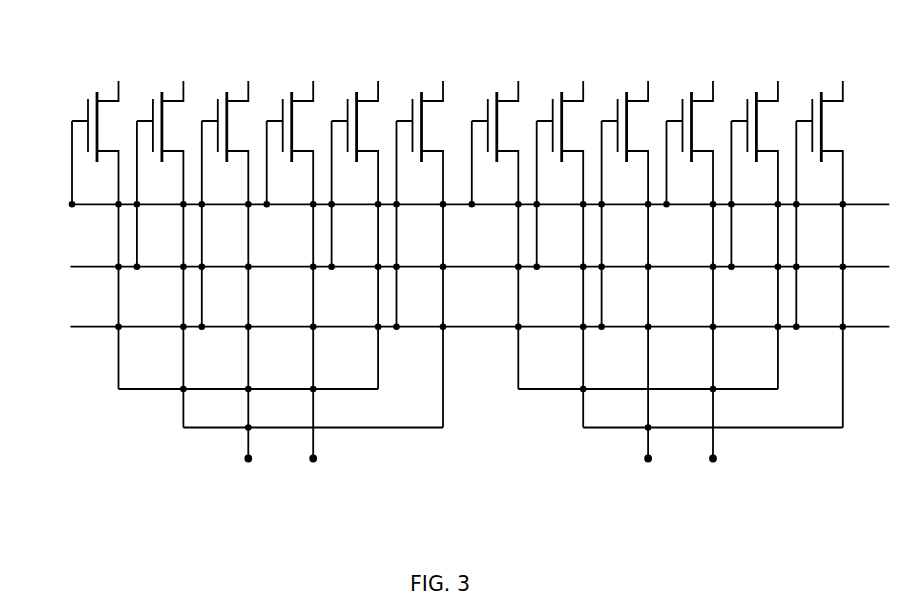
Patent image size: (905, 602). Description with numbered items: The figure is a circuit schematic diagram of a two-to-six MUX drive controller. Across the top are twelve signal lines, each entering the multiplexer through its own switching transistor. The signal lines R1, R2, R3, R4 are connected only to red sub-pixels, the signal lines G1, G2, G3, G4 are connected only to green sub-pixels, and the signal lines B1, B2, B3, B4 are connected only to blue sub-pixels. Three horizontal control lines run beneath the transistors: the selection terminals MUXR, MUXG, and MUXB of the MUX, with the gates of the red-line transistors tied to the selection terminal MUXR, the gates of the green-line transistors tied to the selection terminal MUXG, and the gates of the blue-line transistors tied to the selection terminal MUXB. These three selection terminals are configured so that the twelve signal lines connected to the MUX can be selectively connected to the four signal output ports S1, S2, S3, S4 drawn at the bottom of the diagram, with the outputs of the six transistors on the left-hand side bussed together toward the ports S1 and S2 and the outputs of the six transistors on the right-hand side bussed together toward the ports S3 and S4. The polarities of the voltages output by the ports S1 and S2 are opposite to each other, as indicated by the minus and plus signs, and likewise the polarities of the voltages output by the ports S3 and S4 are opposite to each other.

The signal line R1 is at (95, 206).
The signal line G1 is at (161, 225).
The signal line B1 is at (224, 241).
The signal line R2 is at (289, 241).
The signal line G2 is at (355, 206).
The signal line B2 is at (419, 225).
The signal line R3 is at (494, 206).
The signal line G3 is at (560, 225).
The signal line B3 is at (624, 241).
The signal line R4 is at (689, 241).
The signal line G4 is at (755, 206).
The signal line B4 is at (819, 225).
The selection terminal MUXR is at (449, 204).
The selection terminal MUXG is at (449, 267).
The selection terminal MUXB is at (449, 333).
The signal output port S1 is at (249, 455).
The signal output port S2 is at (313, 474).
The signal output port S3 is at (648, 451).
The signal output port S4 is at (713, 470).